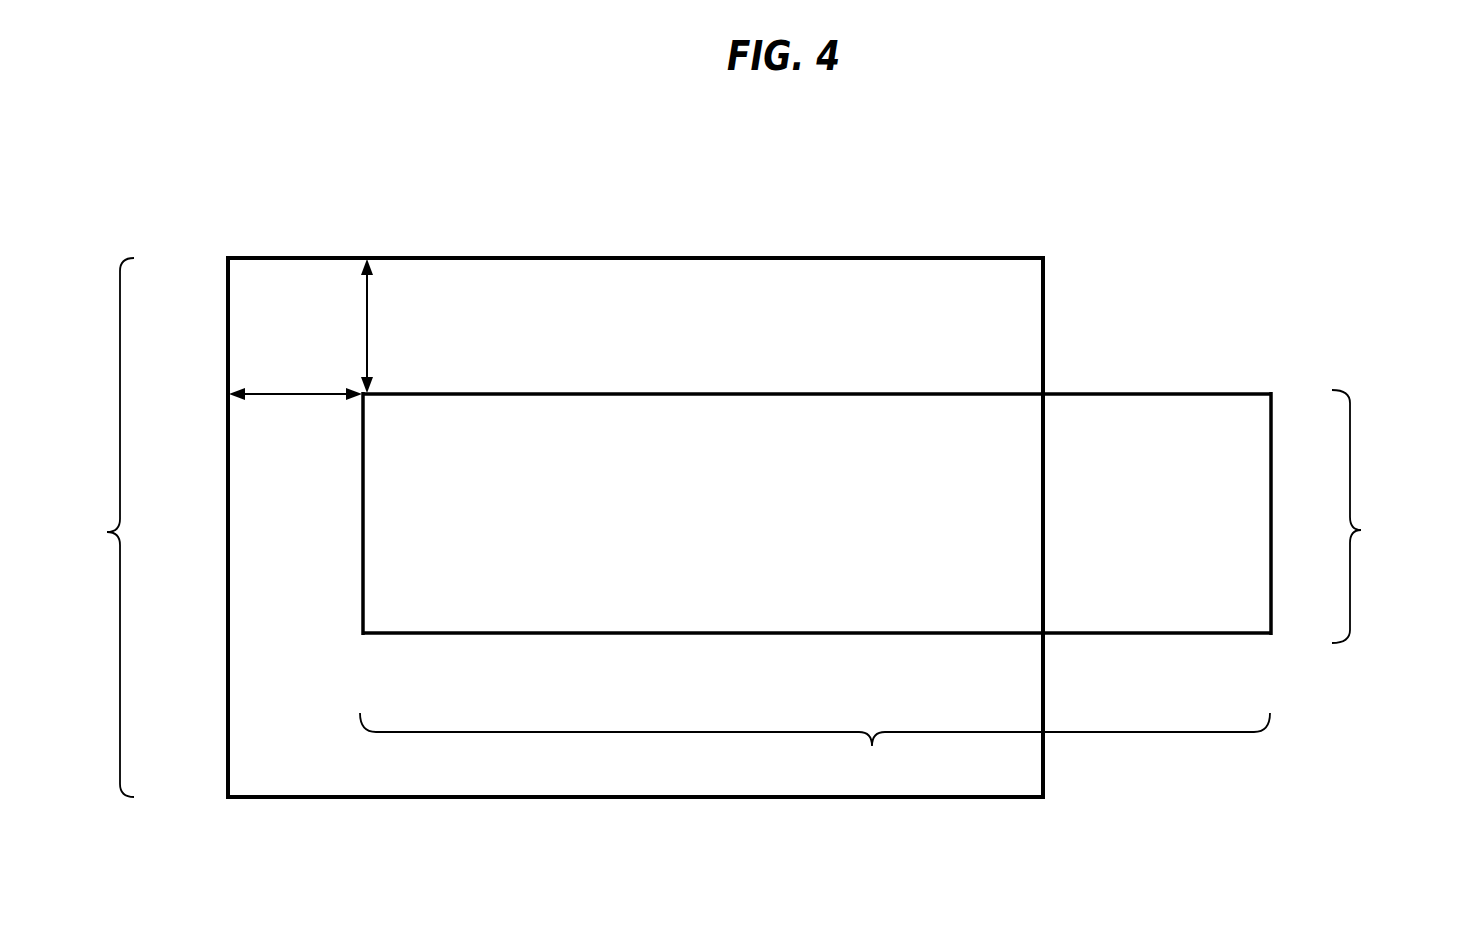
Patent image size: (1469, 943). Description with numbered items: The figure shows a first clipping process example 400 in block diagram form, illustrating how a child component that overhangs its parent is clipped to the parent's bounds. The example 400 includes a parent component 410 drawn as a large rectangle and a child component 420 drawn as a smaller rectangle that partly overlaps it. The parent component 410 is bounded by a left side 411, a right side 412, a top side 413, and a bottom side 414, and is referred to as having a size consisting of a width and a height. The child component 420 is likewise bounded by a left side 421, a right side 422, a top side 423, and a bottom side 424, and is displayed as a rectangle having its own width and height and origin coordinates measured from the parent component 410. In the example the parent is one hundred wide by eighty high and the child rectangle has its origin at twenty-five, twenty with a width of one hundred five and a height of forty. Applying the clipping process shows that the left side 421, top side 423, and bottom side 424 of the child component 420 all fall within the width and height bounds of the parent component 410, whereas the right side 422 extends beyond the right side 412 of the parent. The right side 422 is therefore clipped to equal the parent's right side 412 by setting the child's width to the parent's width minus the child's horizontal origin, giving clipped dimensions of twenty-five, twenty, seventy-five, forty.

The first clipping process example 400 is at (1196, 199).
The parent component 410 is at (312, 324).
The left side of parent component 411 is at (228, 565).
The right side of parent component 412 is at (1045, 297).
The top side of parent component 413 is at (645, 257).
The bottom side of parent component 414 is at (640, 799).
The child component 420 is at (448, 472).
The left side of child component 421 is at (363, 560).
The right side of child component 422 is at (1273, 533).
The top side of child component 423 is at (807, 393).
The bottom side of child component 424 is at (860, 635).